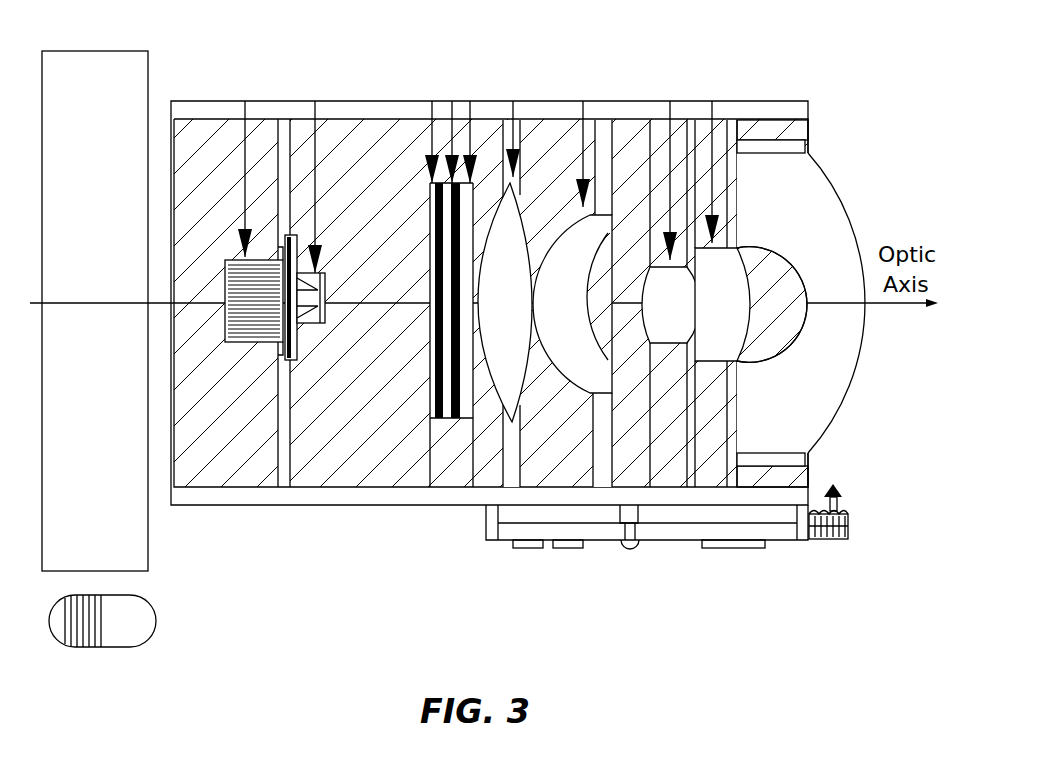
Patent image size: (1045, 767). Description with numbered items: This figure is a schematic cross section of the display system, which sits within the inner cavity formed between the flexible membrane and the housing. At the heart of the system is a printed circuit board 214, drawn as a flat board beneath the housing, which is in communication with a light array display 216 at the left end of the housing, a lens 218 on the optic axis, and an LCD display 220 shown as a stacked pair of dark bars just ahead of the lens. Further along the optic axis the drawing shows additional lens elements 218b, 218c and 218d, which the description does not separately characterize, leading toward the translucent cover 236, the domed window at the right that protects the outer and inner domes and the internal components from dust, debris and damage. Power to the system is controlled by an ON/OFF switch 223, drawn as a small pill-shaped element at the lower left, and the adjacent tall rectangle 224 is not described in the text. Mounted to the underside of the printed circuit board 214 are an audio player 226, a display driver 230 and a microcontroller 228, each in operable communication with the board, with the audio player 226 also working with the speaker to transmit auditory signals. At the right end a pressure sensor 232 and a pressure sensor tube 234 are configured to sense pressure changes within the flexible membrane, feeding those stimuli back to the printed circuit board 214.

The printed circuit board 214 is at (602, 540).
The light array display 216 is at (279, 152).
The lens 218 is at (502, 213).
The lens 218b is at (603, 228).
The lens 218c is at (680, 272).
The lens 218d is at (728, 277).
The LCD display 220 is at (465, 423).
The ON/OFF switch 223 is at (157, 621).
The display / circuit board 224 is at (114, 50).
The audio player 226 is at (528, 550).
The microcontroller 228 is at (733, 548).
The display driver 230 is at (571, 551).
The pressure sensor 232 is at (842, 496).
The pressure sensor tube 234 is at (770, 460).
The translucent cover 236 is at (846, 209).